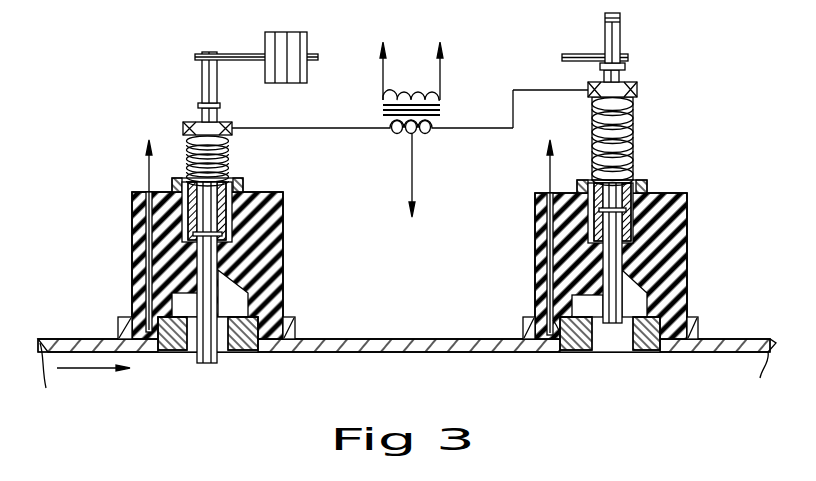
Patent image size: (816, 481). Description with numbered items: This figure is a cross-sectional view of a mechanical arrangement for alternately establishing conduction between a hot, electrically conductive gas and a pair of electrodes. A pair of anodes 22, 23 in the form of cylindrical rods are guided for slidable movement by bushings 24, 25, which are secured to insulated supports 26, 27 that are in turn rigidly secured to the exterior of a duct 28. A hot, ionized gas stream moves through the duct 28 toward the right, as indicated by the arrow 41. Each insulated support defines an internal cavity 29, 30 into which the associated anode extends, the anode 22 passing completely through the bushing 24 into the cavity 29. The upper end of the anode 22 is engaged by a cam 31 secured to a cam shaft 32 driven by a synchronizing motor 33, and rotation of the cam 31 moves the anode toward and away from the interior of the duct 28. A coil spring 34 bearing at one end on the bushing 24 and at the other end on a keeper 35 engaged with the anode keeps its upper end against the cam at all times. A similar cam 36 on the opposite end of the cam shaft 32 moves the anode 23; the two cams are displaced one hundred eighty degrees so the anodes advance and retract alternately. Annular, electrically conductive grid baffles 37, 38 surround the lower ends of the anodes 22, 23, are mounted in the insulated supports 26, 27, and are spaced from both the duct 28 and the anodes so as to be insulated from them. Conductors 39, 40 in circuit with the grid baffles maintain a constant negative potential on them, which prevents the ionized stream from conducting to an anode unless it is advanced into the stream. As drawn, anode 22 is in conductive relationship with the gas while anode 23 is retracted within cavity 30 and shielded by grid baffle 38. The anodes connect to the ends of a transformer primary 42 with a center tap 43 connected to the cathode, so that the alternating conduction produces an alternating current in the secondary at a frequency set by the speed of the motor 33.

The anode 22 is at (213, 356).
The anode 23 is at (610, 327).
The bushing 24 is at (236, 184).
The bushing 25 is at (637, 188).
The insulated support 26 is at (283, 220).
The insulated support 27 is at (687, 220).
The duct 28 is at (345, 339).
The cavity 29 is at (210, 293).
The cavity 30 is at (609, 296).
The cam 31 is at (218, 85).
The cam shaft 32 is at (218, 54).
The synchronizing motor 33 is at (307, 41).
The coil spring 34 is at (229, 152).
The keeper 35 is at (224, 126).
The cam 36 is at (620, 35).
The grid baffle 37 is at (178, 345).
The grid baffle 38 is at (562, 347).
The conductor 39 is at (146, 174).
The conductor 40 is at (548, 177).
The arrow 41 is at (97, 370).
The transformer primary 42 is at (437, 121).
The center tap 43 is at (414, 185).